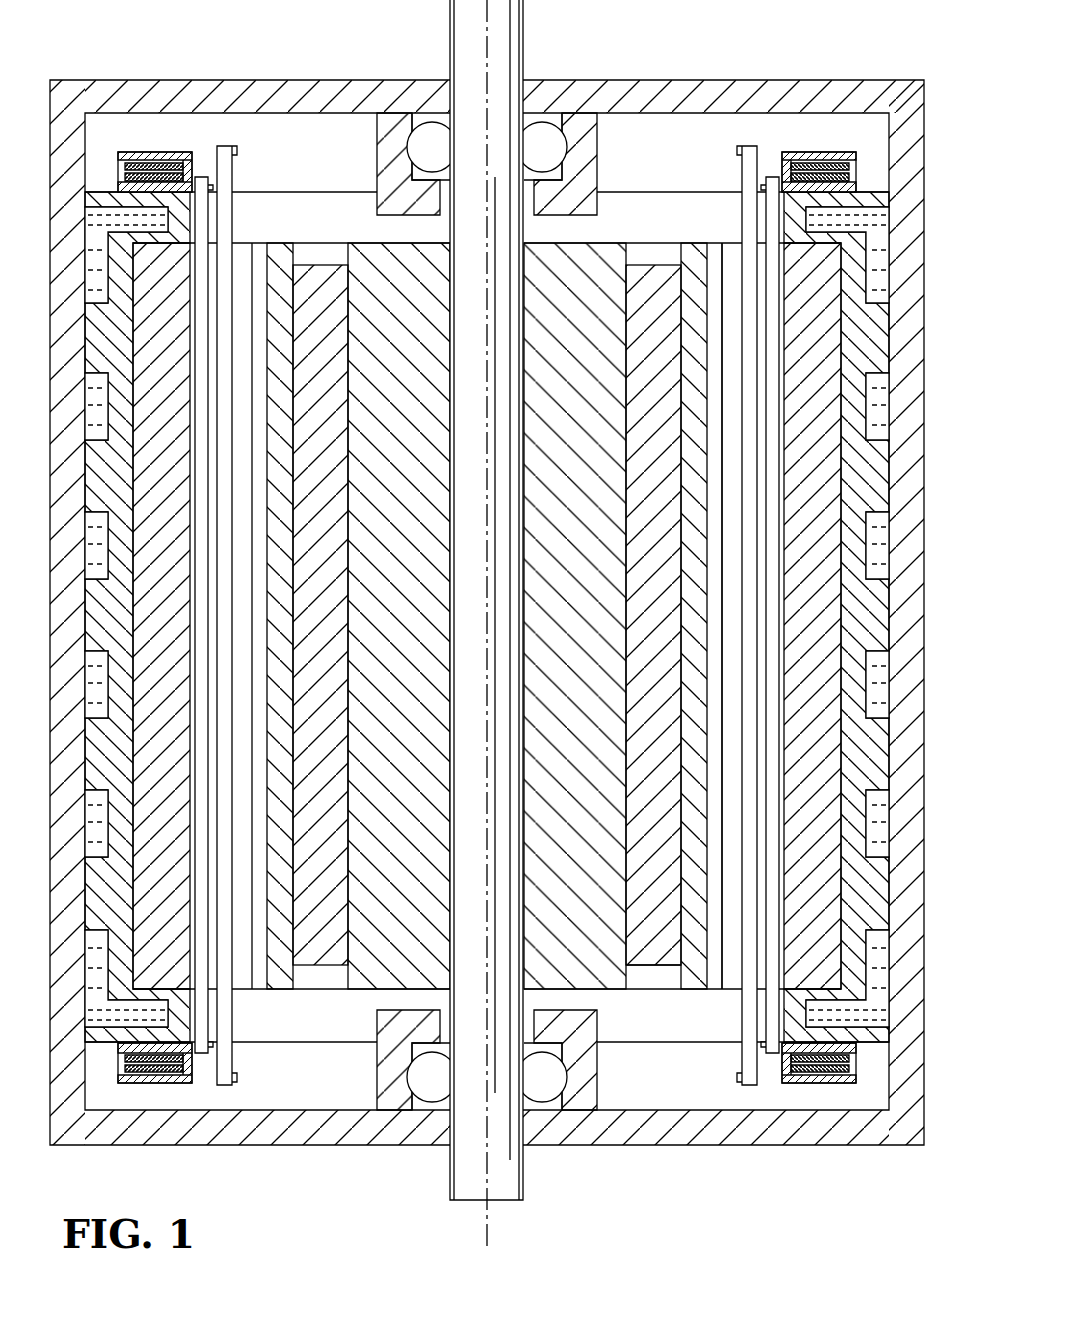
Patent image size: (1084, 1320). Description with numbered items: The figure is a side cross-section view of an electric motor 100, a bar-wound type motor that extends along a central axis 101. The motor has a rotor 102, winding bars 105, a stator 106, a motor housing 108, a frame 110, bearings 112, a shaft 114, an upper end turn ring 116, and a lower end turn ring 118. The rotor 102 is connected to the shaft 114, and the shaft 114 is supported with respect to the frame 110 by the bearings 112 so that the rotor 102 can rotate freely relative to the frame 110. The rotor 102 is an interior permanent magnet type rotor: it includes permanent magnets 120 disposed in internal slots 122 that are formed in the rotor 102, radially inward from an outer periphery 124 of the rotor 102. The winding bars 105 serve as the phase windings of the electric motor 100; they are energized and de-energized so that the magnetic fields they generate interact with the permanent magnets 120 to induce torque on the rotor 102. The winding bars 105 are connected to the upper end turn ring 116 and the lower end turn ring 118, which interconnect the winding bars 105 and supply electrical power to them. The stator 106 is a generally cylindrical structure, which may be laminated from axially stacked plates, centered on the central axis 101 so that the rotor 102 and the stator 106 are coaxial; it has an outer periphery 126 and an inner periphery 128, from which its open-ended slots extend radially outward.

The electric motor 100 is at (501, 625).
The central axis 101 is at (447, 3).
The rotor 102 is at (605, 243).
The winding bars 105 is at (768, 230).
The stator 106 is at (823, 278).
The motor housing 108 is at (872, 472).
The frame 110 is at (905, 608).
The bearings 112 is at (548, 140).
The shaft 114 is at (527, 22).
The upper end turn ring 116 is at (803, 146).
The lower end turn ring 118 is at (864, 1066).
The permanent magnets 120 is at (650, 943).
The internal slots 122 is at (668, 963).
The outer periphery 124 is at (708, 972).
The outer periphery 126 is at (840, 752).
The inner periphery 128 is at (720, 828).